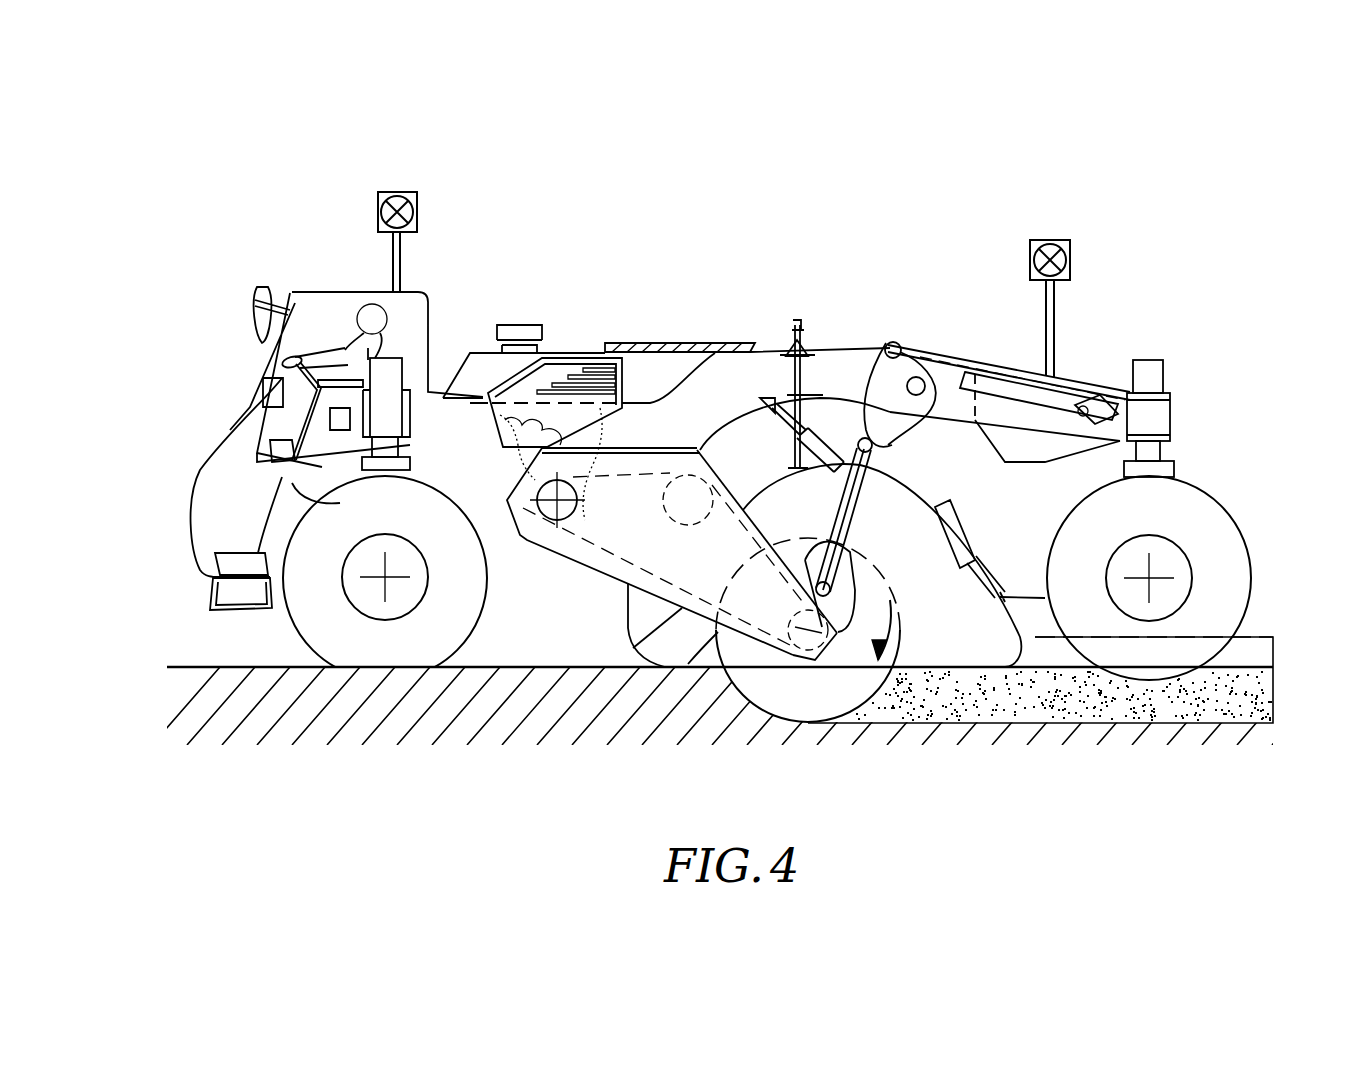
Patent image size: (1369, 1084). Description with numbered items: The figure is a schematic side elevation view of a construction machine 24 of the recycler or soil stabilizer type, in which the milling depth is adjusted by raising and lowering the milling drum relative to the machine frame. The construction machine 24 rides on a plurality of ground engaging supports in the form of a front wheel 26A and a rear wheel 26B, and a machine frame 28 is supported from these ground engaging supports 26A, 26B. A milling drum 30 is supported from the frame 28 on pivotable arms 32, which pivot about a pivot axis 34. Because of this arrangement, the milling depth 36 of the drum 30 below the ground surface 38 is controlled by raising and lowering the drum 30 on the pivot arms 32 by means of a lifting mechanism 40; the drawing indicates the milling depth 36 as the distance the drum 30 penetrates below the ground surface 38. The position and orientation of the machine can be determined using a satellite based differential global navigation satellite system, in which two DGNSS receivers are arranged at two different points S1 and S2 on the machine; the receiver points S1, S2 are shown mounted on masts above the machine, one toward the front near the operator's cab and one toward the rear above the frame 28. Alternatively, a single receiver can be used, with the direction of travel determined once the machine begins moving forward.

The construction machine 24 is at (680, 290).
The front wheel 26A is at (455, 595).
The rear wheel 26B is at (1210, 535).
The machine frame 28 is at (712, 360).
The milling drum 30 is at (712, 667).
The pivotable arms 32 is at (638, 667).
The pivot axis 34 is at (560, 505).
The milling depth 36 is at (1307, 723).
The ground surface 38 is at (190, 665).
The lifting mechanism 40 is at (875, 362).
The DGNSS receiver point S1 is at (1050, 240).
The DGNSS receiver point S2 is at (378, 212).